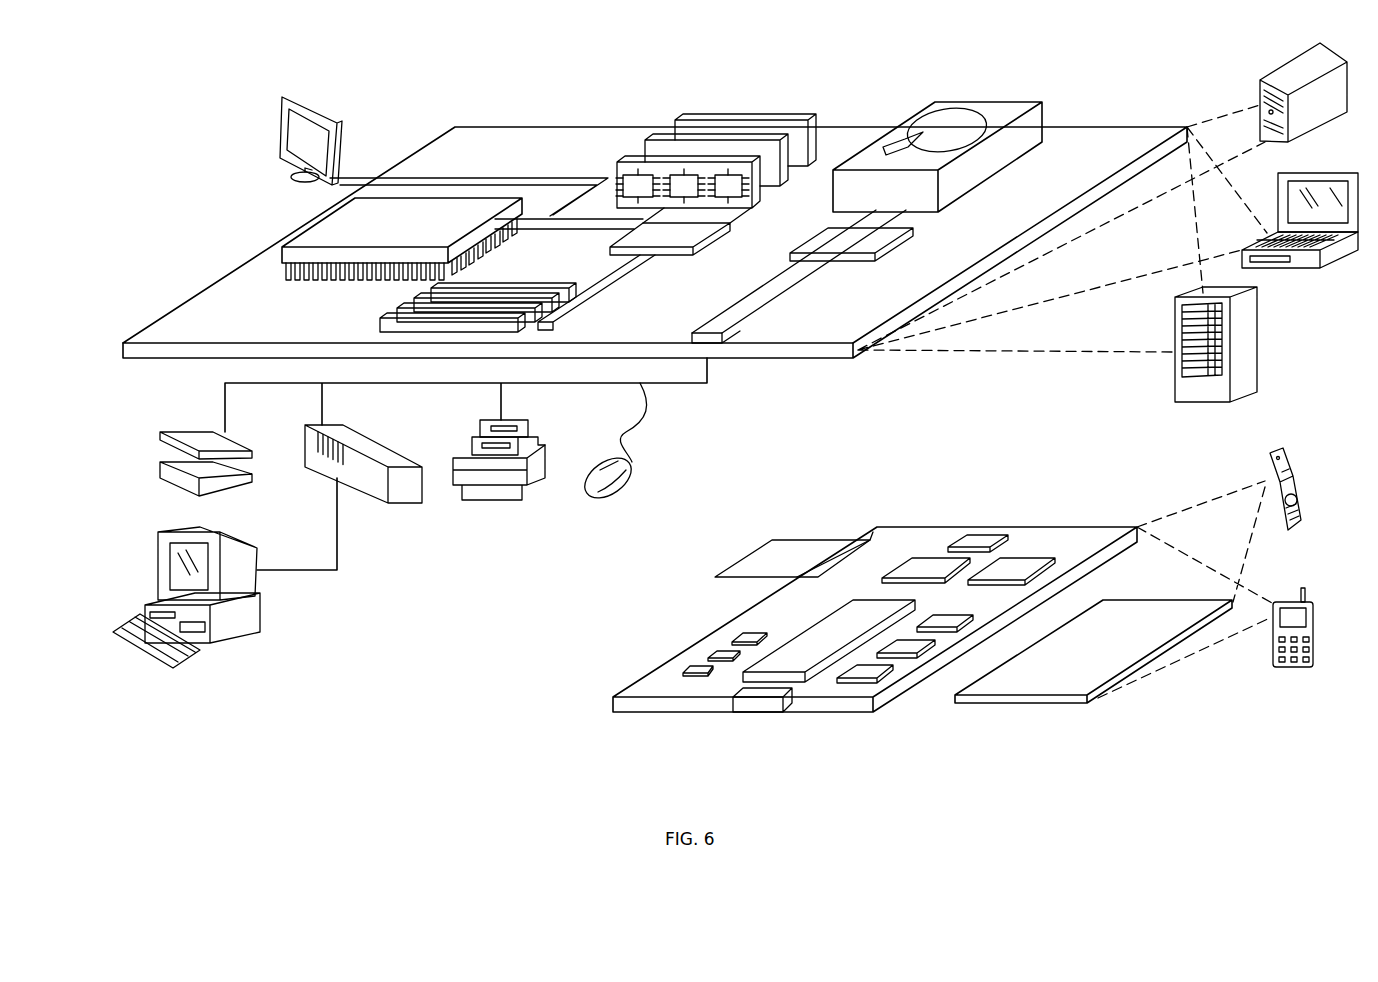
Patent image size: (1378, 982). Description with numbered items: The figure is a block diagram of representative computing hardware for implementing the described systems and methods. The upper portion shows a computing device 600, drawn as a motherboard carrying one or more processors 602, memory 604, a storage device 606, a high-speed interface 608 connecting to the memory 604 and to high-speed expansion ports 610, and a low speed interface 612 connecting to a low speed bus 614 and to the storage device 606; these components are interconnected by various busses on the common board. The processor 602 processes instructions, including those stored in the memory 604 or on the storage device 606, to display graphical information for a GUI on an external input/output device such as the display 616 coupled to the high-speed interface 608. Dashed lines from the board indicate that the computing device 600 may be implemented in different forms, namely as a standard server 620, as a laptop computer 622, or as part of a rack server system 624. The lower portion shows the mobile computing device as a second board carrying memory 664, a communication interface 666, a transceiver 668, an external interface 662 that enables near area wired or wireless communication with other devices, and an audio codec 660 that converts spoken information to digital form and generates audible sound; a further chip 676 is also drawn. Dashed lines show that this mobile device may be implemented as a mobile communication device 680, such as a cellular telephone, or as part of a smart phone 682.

The computing device 600 is at (408, 70).
The processor 602 is at (307, 227).
The memory 604 is at (752, 118).
The storage device 606 is at (977, 100).
The high-speed interface 608 is at (682, 232).
The high-speed expansion ports 610 is at (403, 303).
The low speed interface 612 is at (825, 240).
The low speed bus 614 is at (712, 326).
The display 616 is at (287, 97).
The standard server 620 is at (1266, 72).
The laptop computer 622 is at (1332, 173).
The rack server system 624 is at (1258, 347).
The audio codec 660 is at (568, 722).
The external interface 662 is at (853, 540).
The memory 664 is at (768, 540).
The communication interface 666 is at (928, 558).
The transceiver 668 is at (1020, 560).
The chip 676 is at (873, 670).
The mobile communication device 680 is at (1280, 452).
The smart phone 682 is at (1290, 602).